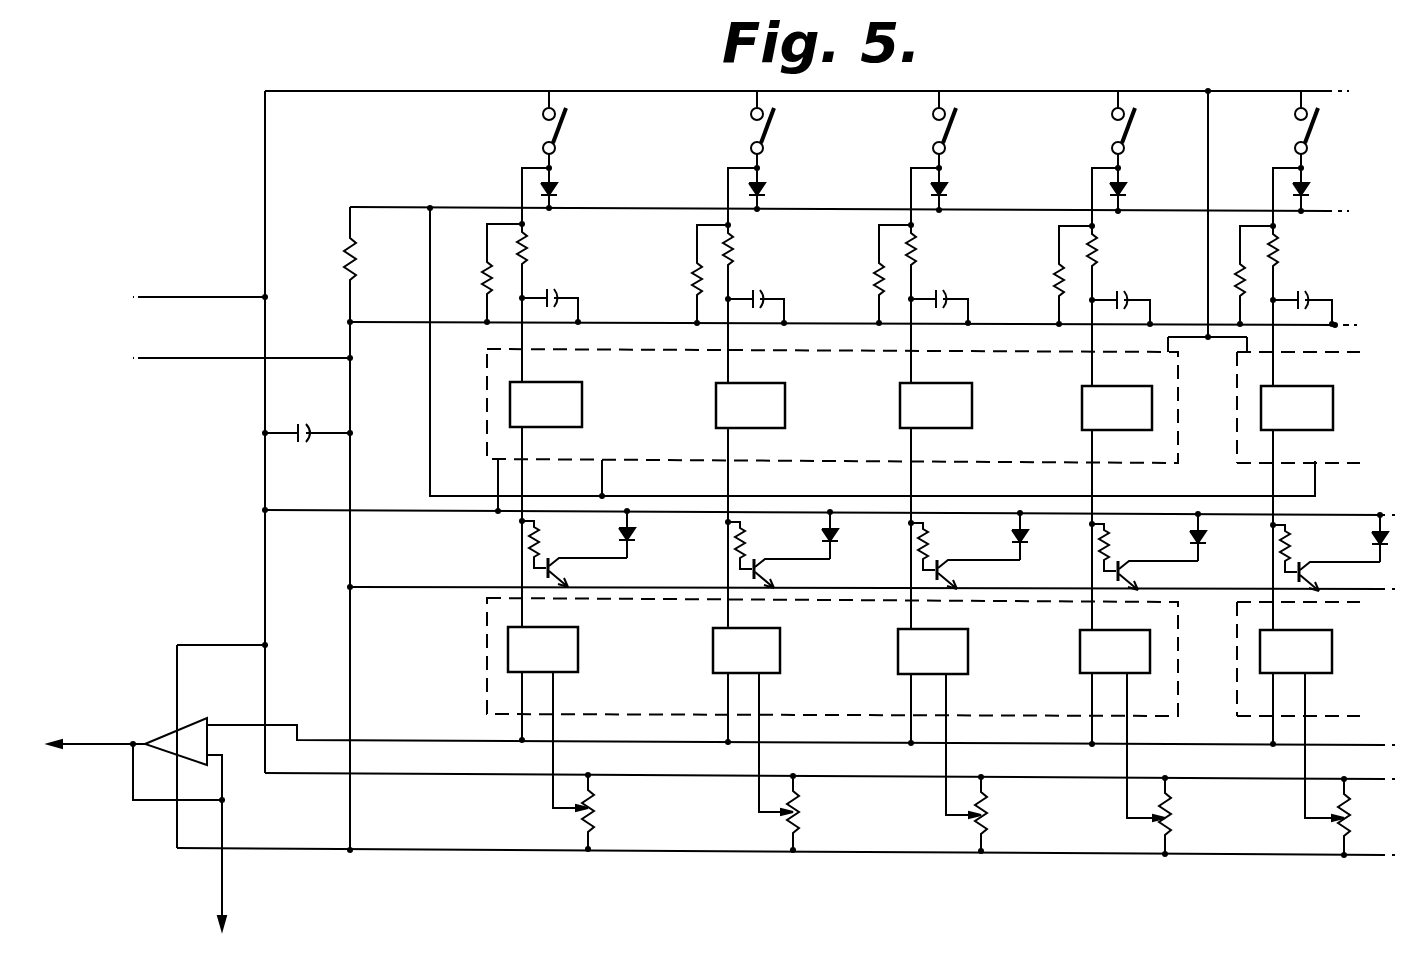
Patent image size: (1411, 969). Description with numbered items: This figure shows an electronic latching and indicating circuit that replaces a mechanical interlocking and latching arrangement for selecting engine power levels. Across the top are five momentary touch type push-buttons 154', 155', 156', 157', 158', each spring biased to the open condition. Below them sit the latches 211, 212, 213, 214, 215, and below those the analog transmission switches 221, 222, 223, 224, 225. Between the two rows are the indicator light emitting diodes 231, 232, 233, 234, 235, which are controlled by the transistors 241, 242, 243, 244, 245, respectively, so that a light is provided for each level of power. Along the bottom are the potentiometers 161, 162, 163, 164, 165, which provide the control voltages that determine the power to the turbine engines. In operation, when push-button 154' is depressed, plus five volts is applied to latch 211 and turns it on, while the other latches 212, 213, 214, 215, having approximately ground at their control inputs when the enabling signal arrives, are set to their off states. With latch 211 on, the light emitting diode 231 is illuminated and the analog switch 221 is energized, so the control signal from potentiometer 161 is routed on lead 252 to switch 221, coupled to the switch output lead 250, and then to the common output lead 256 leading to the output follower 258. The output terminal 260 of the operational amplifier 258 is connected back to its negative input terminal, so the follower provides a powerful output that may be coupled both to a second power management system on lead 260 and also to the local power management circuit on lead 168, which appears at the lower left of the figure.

The push-button 154' is at (505, 129).
The push-button 155' is at (719, 129).
The push-button 156' is at (900, 129).
The push-button 157' is at (1080, 129).
The push-button 158' is at (1344, 129).
The latch 211 is at (571, 398).
The latch 212 is at (773, 399).
The latch 213 is at (963, 399).
The latch 214 is at (1143, 402).
The latch 215 is at (1323, 397).
The analog transmission switch 221 is at (571, 640).
The analog transmission switch 222 is at (773, 640).
The analog transmission switch 223 is at (958, 642).
The analog transmission switch 224 is at (1138, 646).
The analog transmission switch 225 is at (1323, 649).
The light emitting diode 231 is at (630, 536).
The light emitting diode 232 is at (834, 536).
The light emitting diode 233 is at (1017, 537).
The light emitting diode 234 is at (1197, 540).
The light emitting diode 235 is at (1379, 543).
The transistor 241 is at (568, 580).
The transistor 242 is at (771, 580).
The transistor 243 is at (958, 583).
The transistor 244 is at (1138, 585).
The transistor 245 is at (1318, 588).
The potentiometer 161 is at (590, 822).
The potentiometer 162 is at (795, 820).
The potentiometer 163 is at (985, 820).
The potentiometer 164 is at (1167, 826).
The potentiometer 165 is at (1346, 830).
The output lead 250 is at (520, 681).
The lead 252 is at (553, 700).
The common output lead 256 is at (445, 743).
The output follower 258 is at (165, 735).
The output terminal 260 is at (83, 744).
The output circuit 168 is at (222, 893).